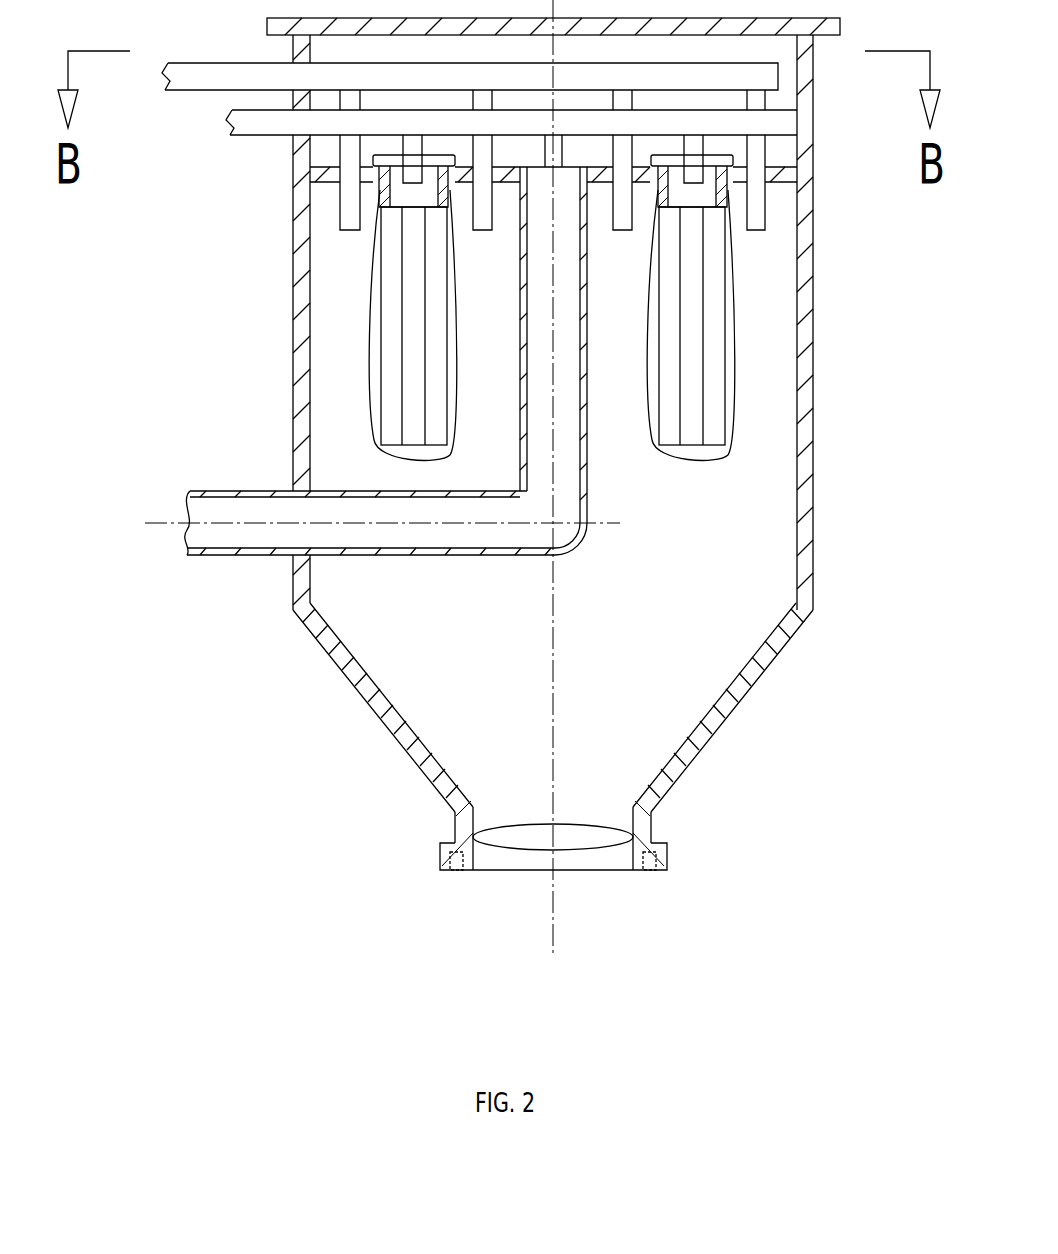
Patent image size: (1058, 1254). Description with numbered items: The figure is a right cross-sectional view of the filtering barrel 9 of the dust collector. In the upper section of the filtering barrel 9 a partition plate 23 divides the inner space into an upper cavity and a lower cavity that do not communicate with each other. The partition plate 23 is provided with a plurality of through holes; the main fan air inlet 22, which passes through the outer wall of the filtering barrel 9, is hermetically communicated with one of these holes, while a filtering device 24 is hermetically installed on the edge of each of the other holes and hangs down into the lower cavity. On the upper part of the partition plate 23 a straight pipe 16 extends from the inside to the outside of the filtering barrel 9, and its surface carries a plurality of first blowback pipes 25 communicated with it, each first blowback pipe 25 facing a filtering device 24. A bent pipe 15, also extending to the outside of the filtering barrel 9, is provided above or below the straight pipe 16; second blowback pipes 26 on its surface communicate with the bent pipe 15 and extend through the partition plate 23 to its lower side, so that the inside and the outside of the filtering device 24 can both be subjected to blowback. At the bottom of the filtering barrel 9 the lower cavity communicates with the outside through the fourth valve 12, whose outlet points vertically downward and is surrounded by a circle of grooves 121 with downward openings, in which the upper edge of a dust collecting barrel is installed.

The filtering barrel 9 is at (372, 693).
The fourth valve 12 is at (588, 842).
The grooves 121 is at (457, 862).
The bent pipe 15 is at (193, 78).
The straight pipe 16 is at (290, 120).
The main fan air inlet 22 is at (246, 495).
The partition plate 23 is at (776, 174).
The filtering device 24 is at (695, 457).
The first blowback pipes 25 is at (689, 179).
The second blowback pipes 26 is at (350, 215).